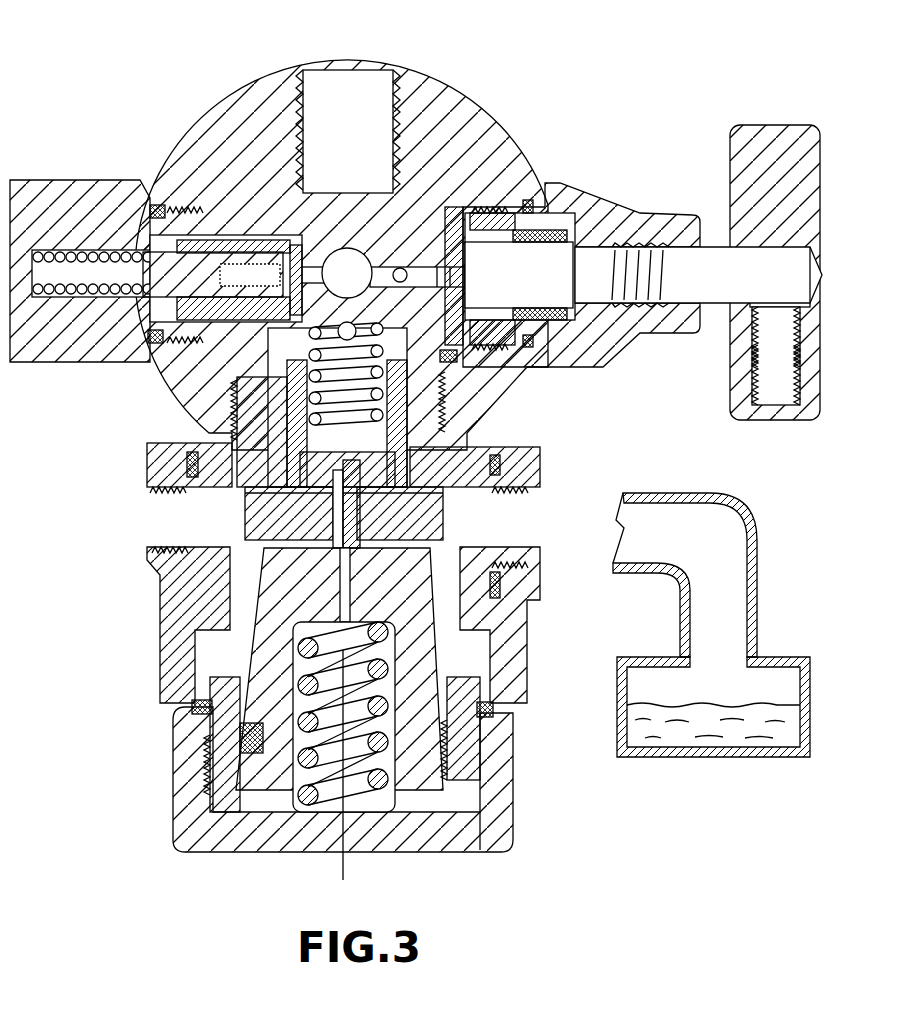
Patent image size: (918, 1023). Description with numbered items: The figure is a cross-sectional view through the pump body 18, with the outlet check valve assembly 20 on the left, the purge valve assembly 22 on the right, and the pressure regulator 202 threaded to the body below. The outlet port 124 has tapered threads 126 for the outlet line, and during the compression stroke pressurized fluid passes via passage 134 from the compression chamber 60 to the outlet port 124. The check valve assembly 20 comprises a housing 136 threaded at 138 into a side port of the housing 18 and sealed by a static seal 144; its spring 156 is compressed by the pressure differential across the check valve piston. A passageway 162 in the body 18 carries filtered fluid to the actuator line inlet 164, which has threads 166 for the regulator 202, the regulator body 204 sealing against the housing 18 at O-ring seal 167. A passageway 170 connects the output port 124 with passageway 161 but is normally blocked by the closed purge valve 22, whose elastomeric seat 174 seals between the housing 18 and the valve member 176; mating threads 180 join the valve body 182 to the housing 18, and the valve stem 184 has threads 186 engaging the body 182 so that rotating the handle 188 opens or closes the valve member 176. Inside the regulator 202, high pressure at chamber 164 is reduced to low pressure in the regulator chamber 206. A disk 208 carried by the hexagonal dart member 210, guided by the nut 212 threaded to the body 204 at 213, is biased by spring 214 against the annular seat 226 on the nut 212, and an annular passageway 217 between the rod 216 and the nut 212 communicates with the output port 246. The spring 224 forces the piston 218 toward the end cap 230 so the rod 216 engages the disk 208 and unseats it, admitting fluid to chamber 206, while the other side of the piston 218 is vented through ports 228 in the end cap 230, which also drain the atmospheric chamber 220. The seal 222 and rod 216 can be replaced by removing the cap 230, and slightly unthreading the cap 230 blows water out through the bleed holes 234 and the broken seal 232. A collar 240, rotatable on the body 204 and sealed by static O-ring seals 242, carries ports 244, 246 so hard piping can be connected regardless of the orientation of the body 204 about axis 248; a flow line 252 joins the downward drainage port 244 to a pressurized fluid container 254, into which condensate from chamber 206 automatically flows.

The pump body 18 is at (483, 145).
The outlet check valve assembly 20 is at (156, 210).
The purge valve assembly 22 is at (622, 233).
The compression chamber 60 is at (360, 284).
The outlet port 124 is at (367, 143).
The tapered threads 126 is at (298, 118).
The passage 134 is at (295, 215).
The housing 136 is at (85, 197).
The threads 138 is at (193, 210).
The static seal 144 is at (155, 207).
The spring 156 is at (60, 262).
The passageway 161 is at (402, 268).
The passageway 162 is at (347, 332).
The actuator line inlet 164 is at (277, 367).
The threads 166 is at (383, 418).
The O-ring seal 167 is at (528, 345).
The passageway 170 is at (423, 177).
The elastomeric seat 174 is at (455, 230).
The valve member 176 is at (557, 297).
The mating threads 180 is at (457, 361).
The valve body 182 is at (527, 204).
The valve stem 184 is at (710, 263).
The threads 186 is at (640, 290).
The handle 188 is at (740, 167).
The pressure regulator 202 is at (332, 612).
The regulator body 204 is at (507, 660).
The regulator chamber 206 is at (237, 572).
The disk 208 is at (327, 462).
The dart member 210 is at (507, 447).
The nut 212 is at (413, 520).
The threaded connection 213 is at (267, 432).
The spring 214 is at (380, 440).
The rod 216 is at (362, 555).
The annular passageway 217 is at (380, 497).
The piston 218 is at (263, 685).
The atmospheric chamber 220 is at (420, 790).
The seal 222 is at (250, 737).
The spring 224 is at (303, 795).
The annular seat 226 is at (330, 508).
The ports 228 is at (472, 847).
The end cap 230 is at (492, 764).
The seal 232 is at (497, 712).
The bleed holes 234 is at (483, 685).
The collar 240 is at (515, 587).
The static O-ring seals 242 is at (500, 590).
The drainage port 244 is at (539, 538).
The output port 246 is at (189, 538).
The axis 248 is at (345, 878).
The flow line 252 is at (757, 578).
The pressurized fluid container 254 is at (813, 683).